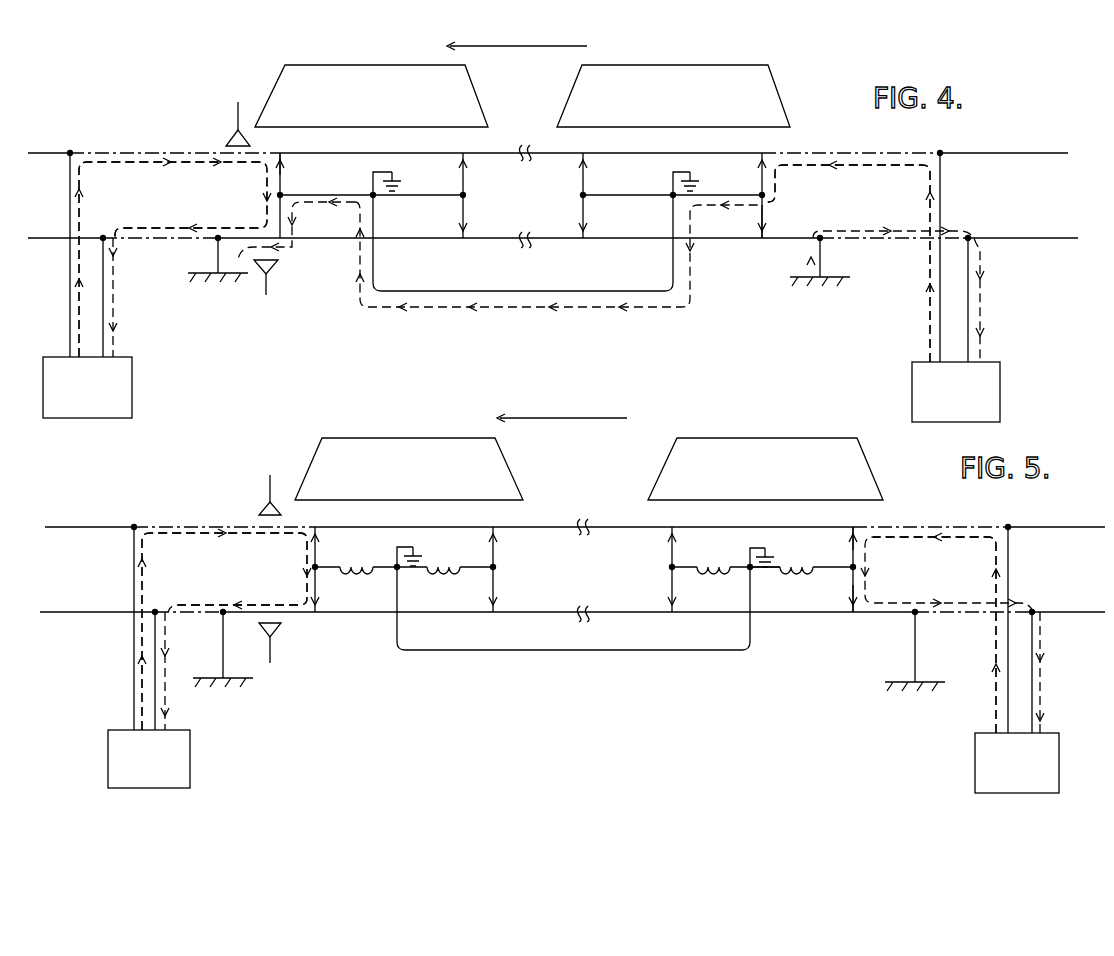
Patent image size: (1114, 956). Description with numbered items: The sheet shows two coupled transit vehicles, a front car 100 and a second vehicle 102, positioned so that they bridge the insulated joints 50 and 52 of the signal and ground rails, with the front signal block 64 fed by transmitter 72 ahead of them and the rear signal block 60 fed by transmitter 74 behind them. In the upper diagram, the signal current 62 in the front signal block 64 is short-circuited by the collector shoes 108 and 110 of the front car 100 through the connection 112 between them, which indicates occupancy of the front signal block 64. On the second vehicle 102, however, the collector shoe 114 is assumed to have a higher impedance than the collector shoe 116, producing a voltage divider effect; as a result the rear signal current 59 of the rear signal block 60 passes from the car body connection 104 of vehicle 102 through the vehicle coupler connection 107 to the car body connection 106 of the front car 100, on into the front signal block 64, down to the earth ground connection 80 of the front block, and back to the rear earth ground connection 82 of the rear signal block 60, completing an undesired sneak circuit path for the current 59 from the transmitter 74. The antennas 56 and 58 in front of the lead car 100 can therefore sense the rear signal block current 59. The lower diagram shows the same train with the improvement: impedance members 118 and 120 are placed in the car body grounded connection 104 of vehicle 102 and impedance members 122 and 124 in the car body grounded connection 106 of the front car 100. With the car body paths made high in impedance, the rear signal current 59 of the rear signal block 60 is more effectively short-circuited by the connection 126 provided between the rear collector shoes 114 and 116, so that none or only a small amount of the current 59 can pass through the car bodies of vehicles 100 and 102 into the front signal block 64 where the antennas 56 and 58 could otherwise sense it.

In FIG. 4, the insulated joint 50 is at (521, 144).
In FIG. 4, the insulated joint 52 is at (520, 248).
In FIG. 4, the antenna 56 is at (231, 140).
In FIG. 5, the antenna 56 is at (264, 510).
In FIG. 4, the antenna 58 is at (279, 263).
In FIG. 5, the antenna 58 is at (282, 626).
In FIG. 4, the rear signal current 59 is at (861, 166).
In FIG. 5, the rear signal current 59 is at (945, 540).
In FIG. 4, the rear signal block 60 is at (800, 205).
In FIG. 5, the rear signal block 60 is at (890, 577).
In FIG. 4, the signal current 62 is at (166, 164).
In FIG. 5, the signal current 62 is at (227, 535).
In FIG. 4, the front signal block 64 is at (240, 196).
In FIG. 5, the front signal block 64 is at (252, 578).
In FIG. 4, the transmitter 72 is at (134, 378).
In FIG. 5, the transmitter 72 is at (192, 754).
In FIG. 4, the transmitter 74 is at (1002, 389).
In FIG. 5, the transmitter 74 is at (1061, 766).
In FIG. 4, the earth ground connection 80 is at (216, 256).
In FIG. 4, the rear earth ground connection 82 is at (825, 264).
In FIG. 4, the front car 100 is at (338, 104).
In FIG. 5, the front car 100 is at (391, 479).
In FIG. 4, the second vehicle 102 is at (638, 104).
In FIG. 5, the second vehicle 102 is at (753, 482).
In FIG. 4, the car body connection 104 is at (632, 194).
In FIG. 5, the car body connection 104 is at (760, 570).
In FIG. 4, the car body connection 106 is at (436, 194).
In FIG. 5, the car body connection 106 is at (476, 566).
In FIG. 4, the vehicle coupler connection 107 is at (594, 290).
In FIG. 5, the vehicle coupler connection 107 is at (456, 651).
In FIG. 4, the collector shoe 108 is at (285, 157).
In FIG. 4, the collector shoe 110 is at (295, 218).
In FIG. 4, the connection 112 is at (283, 181).
In FIG. 4, the collector shoe 114 is at (760, 232).
In FIG. 5, the collector shoe 114 is at (851, 602).
In FIG. 4, the collector shoe 116 is at (760, 169).
In FIG. 5, the collector shoe 116 is at (857, 536).
In FIG. 5, the impedance member 118 is at (792, 563).
In FIG. 5, the impedance member 120 is at (722, 580).
In FIG. 5, the impedance member 122 is at (452, 578).
In FIG. 5, the impedance member 124 is at (362, 577).
In FIG. 5, the connection 126 is at (852, 550).